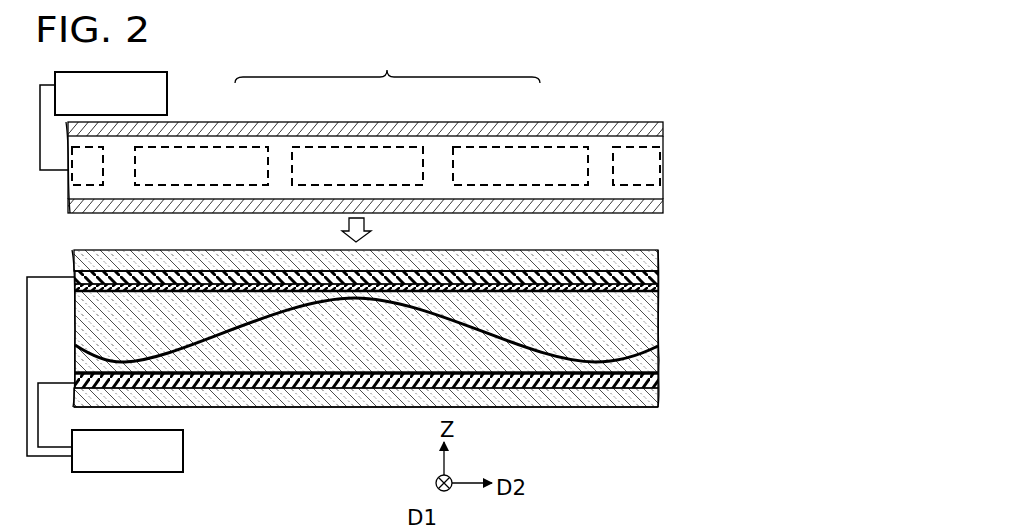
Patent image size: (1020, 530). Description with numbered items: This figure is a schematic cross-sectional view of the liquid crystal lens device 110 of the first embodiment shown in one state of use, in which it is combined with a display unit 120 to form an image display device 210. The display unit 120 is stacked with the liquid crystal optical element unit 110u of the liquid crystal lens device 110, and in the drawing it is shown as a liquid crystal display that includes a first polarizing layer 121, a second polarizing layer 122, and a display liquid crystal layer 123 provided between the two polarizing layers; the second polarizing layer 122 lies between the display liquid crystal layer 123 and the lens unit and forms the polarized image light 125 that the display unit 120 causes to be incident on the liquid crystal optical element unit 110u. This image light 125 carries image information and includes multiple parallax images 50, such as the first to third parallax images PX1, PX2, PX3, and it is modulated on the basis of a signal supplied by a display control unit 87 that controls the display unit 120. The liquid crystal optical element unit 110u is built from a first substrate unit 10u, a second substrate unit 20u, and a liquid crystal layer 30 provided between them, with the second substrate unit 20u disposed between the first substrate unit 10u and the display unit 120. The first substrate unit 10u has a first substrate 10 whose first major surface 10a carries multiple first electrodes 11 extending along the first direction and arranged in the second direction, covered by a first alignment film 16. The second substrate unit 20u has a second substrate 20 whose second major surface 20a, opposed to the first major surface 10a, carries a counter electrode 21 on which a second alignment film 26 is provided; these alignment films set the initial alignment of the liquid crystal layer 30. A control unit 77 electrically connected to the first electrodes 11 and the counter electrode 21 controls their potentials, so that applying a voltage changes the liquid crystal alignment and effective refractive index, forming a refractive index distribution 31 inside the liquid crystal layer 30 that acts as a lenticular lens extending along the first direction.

The image display device 210 is at (420, 134).
The display unit 120 is at (420, 166).
The first polarizing layer 121 is at (632, 130).
The second polarizing layer 122 is at (632, 205).
The display liquid crystal layer 123 is at (630, 163).
The image light 125 is at (371, 232).
The parallax images 50 is at (387, 102).
The first parallax image PX1 is at (238, 162).
The second parallax image PX2 is at (363, 158).
The third parallax image PX3 is at (517, 160).
The display control unit 87 is at (133, 90).
The control unit 77 is at (163, 447).
The liquid crystal lens device 110 is at (454, 359).
The liquid crystal optical element unit 110u is at (454, 344).
The second substrate unit 20u is at (421, 264).
The second substrate 20 is at (640, 258).
The second major surface 20a is at (565, 270).
The counter electrode 21 is at (645, 276).
The second alignment film 26 is at (640, 288).
The liquid crystal layer 30 is at (637, 328).
The refractive index distribution 31 is at (248, 318).
The first substrate unit 10u is at (421, 412).
The first alignment film 16 is at (645, 375).
The first electrodes 11 is at (645, 384).
The first substrate 10 is at (640, 402).
The first major surface 10a is at (567, 389).